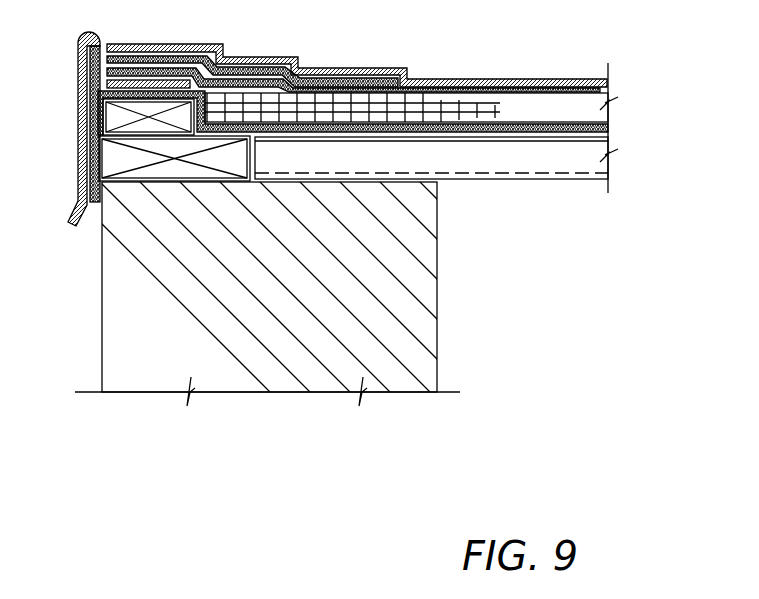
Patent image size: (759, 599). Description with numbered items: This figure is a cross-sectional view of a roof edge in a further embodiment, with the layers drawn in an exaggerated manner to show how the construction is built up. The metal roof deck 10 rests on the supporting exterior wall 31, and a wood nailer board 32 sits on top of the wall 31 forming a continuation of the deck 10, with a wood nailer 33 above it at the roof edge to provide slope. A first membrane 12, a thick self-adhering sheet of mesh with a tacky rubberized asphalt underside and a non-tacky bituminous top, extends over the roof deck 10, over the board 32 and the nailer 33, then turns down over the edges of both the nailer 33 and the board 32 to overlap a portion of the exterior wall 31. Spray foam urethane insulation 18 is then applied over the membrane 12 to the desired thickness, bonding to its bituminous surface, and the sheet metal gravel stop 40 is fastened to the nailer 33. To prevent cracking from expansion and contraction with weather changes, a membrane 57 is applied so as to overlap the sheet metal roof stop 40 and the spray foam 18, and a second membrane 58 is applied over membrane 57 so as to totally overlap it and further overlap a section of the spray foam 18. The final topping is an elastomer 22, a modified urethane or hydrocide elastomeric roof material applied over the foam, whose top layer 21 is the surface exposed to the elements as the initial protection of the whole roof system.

The metal roof deck 10 is at (568, 169).
The membrane 12 is at (619, 131).
The spray foam urethane insulation 18 is at (501, 104).
The top layer 21 is at (370, 66).
The elastomer 22 is at (620, 90).
The supporting exterior wall 31 is at (447, 361).
The wood nailer board 32 is at (120, 162).
The wood nailer 33 is at (115, 121).
The sheet metal gravel stop 40 is at (78, 78).
The membrane 57 is at (157, 70).
The second membrane 58 is at (243, 68).